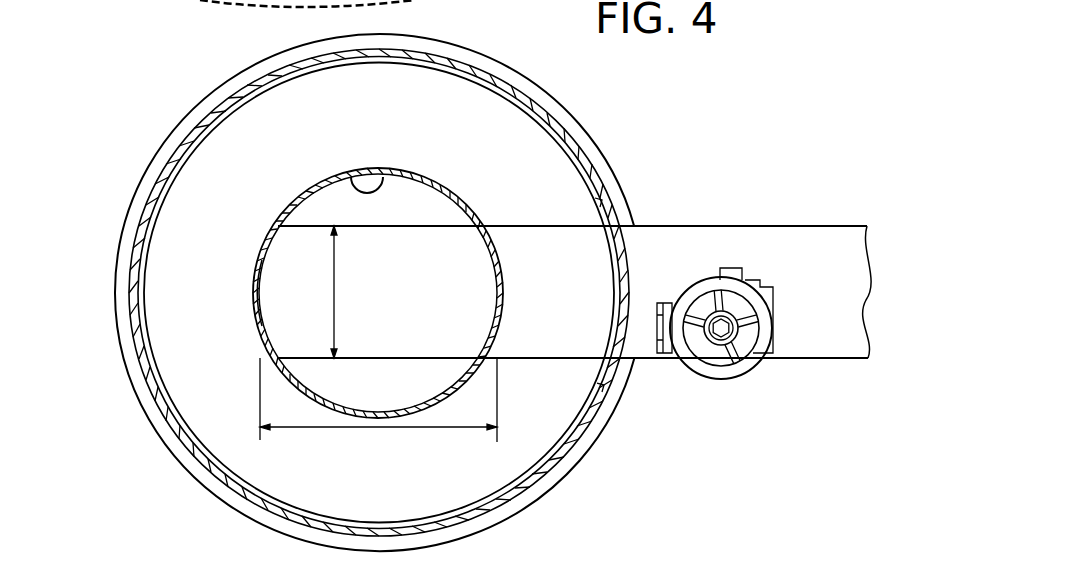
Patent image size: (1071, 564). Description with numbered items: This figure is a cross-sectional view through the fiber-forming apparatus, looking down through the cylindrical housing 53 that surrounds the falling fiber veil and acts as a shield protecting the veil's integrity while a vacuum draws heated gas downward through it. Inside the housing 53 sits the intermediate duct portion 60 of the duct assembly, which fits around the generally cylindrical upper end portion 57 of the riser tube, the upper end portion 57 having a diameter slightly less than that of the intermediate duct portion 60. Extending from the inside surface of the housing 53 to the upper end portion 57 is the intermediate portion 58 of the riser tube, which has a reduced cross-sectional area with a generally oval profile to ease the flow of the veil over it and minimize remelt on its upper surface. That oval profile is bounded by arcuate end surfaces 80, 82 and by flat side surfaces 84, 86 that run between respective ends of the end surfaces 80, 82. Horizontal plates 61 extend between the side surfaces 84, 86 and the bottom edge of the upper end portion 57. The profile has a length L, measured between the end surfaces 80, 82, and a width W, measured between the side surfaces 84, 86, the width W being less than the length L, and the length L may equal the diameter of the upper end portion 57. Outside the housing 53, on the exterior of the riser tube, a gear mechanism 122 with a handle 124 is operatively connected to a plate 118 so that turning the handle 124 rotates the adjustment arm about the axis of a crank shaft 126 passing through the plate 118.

The cylindrical housing 53 is at (547, 112).
The upper end portion 57 is at (386, 172).
The intermediate portion 58 is at (525, 358).
The intermediate duct portion 60 is at (313, 188).
The horizontal plates 61 is at (366, 216).
The arcuate end surface 80 is at (546, 240).
The arcuate end surface 82 is at (265, 267).
The flat side surface 84 is at (373, 358).
The flat side surface 86 is at (373, 227).
The plate 118 is at (770, 287).
The gear mechanism 122 is at (750, 338).
The handle 124 is at (765, 323).
The crank shaft 126 is at (737, 268).
The width W is at (336, 282).
The length L is at (330, 427).